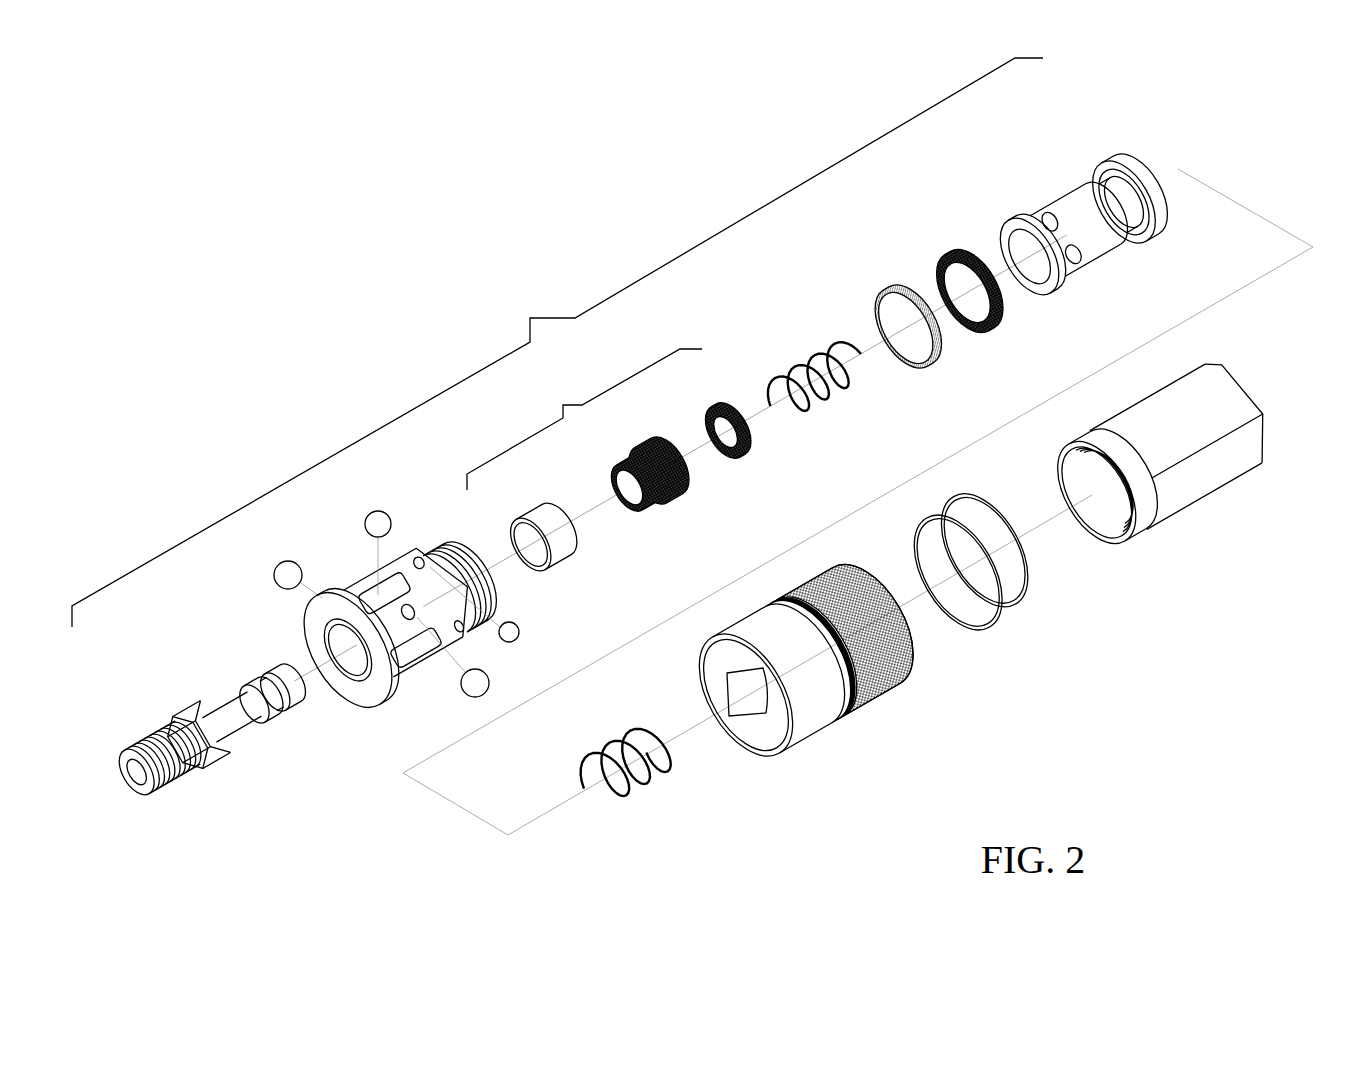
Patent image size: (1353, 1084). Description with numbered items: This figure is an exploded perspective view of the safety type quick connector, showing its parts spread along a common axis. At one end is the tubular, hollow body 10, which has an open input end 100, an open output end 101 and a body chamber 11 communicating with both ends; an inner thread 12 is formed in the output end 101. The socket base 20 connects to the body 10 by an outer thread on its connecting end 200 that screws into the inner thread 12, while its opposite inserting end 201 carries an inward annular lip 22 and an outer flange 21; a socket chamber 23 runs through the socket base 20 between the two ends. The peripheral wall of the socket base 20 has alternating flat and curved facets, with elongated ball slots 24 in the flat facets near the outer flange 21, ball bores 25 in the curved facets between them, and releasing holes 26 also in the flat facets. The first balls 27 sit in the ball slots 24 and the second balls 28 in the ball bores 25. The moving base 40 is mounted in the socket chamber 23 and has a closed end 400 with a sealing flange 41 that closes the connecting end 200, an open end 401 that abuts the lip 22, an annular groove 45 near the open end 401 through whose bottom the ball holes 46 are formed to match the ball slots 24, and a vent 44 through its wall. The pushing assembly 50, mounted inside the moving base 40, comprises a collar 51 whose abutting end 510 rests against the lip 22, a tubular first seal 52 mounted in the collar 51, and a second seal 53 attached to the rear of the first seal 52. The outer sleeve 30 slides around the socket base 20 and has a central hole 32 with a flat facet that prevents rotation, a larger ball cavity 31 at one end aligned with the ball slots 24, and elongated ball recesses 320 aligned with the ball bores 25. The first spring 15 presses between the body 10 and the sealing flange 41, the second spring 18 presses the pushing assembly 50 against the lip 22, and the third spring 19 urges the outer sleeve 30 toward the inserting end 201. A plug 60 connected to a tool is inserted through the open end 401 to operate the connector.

The body 10 is at (1208, 518).
The input end 100 is at (1267, 446).
The output end 101 is at (1128, 534).
The body chamber 11 is at (1093, 460).
The inner thread 12 is at (1110, 527).
The first spring 15 is at (650, 789).
The second spring 18 is at (806, 370).
The third spring 19 is at (980, 628).
The socket base 20 is at (406, 538).
The connecting end 200 is at (493, 614).
The inserting end 201 is at (364, 690).
The outer flange 21 is at (326, 602).
The annular lip 22 is at (345, 672).
The socket chamber 23 is at (340, 644).
The elongated ball slots 24 is at (367, 587).
The ball bores 25 is at (418, 615).
The releasing hole 26 is at (428, 558).
The first balls 27 is at (371, 531).
The second balls 28 is at (516, 636).
The outer sleeve 30 is at (868, 725).
The ball cavity 31 is at (732, 730).
The central hole 32 is at (765, 723).
The ball recesses 320 is at (733, 693).
The moving base 40 is at (1059, 179).
The closed end 400 is at (1157, 173).
The open end 401 is at (1033, 287).
The sealing flange 41 is at (1161, 225).
The vent 44 is at (1130, 186).
The annular groove 45 is at (1063, 238).
The ball holes 46 is at (1043, 208).
The pushing assembly 50 is at (584, 419).
The collar 51 is at (544, 510).
The abutting end 510 is at (545, 564).
The first seal 52 is at (658, 498).
The second seal 53 is at (715, 415).
The plug 60 is at (178, 683).